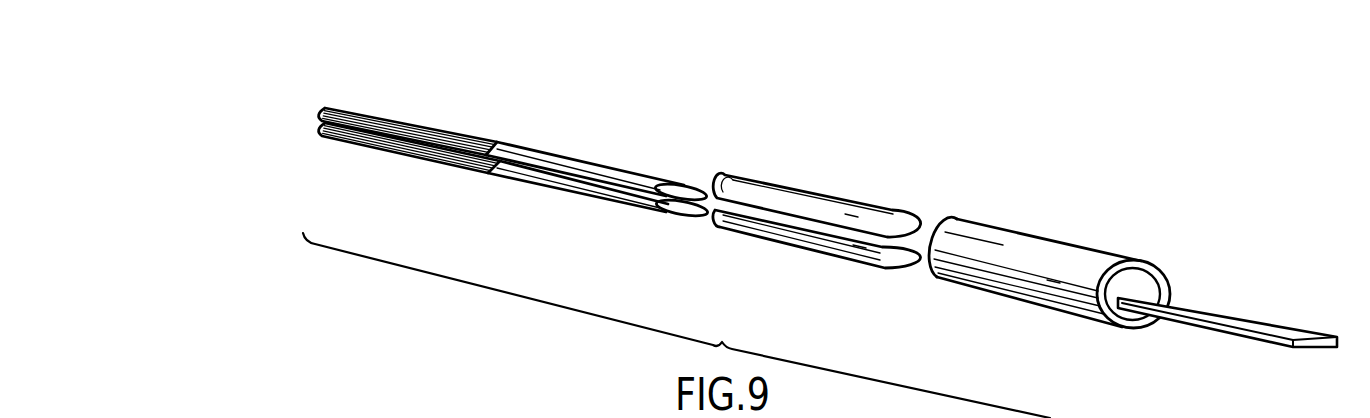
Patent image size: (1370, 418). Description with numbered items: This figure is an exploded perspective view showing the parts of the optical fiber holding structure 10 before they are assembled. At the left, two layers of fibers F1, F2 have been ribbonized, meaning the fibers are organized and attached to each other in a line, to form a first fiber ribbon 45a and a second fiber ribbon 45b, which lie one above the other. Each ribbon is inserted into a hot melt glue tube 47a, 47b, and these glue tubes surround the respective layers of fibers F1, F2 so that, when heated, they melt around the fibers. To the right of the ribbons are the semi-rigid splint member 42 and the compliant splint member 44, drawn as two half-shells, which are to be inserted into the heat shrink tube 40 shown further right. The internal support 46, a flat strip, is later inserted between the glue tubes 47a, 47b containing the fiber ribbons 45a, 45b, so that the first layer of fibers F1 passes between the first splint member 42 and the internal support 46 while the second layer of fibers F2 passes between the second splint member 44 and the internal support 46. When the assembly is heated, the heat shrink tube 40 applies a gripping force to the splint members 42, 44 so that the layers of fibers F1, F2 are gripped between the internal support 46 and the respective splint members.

The optical fiber holding structure 10 is at (992, 166).
The heat shrink tube 40 is at (1087, 247).
The semi-rigid splint member 42 is at (860, 203).
The compliant splint member 44 is at (820, 253).
The first fiber ribbon 45a is at (390, 101).
The second fiber ribbon 45b is at (340, 156).
The internal support 46 is at (1228, 315).
The hot melt glue tube 47a is at (648, 176).
The hot melt glue tube 47b is at (627, 203).
The first layer of fibers F1 is at (490, 145).
The second layer of fibers F2 is at (436, 162).